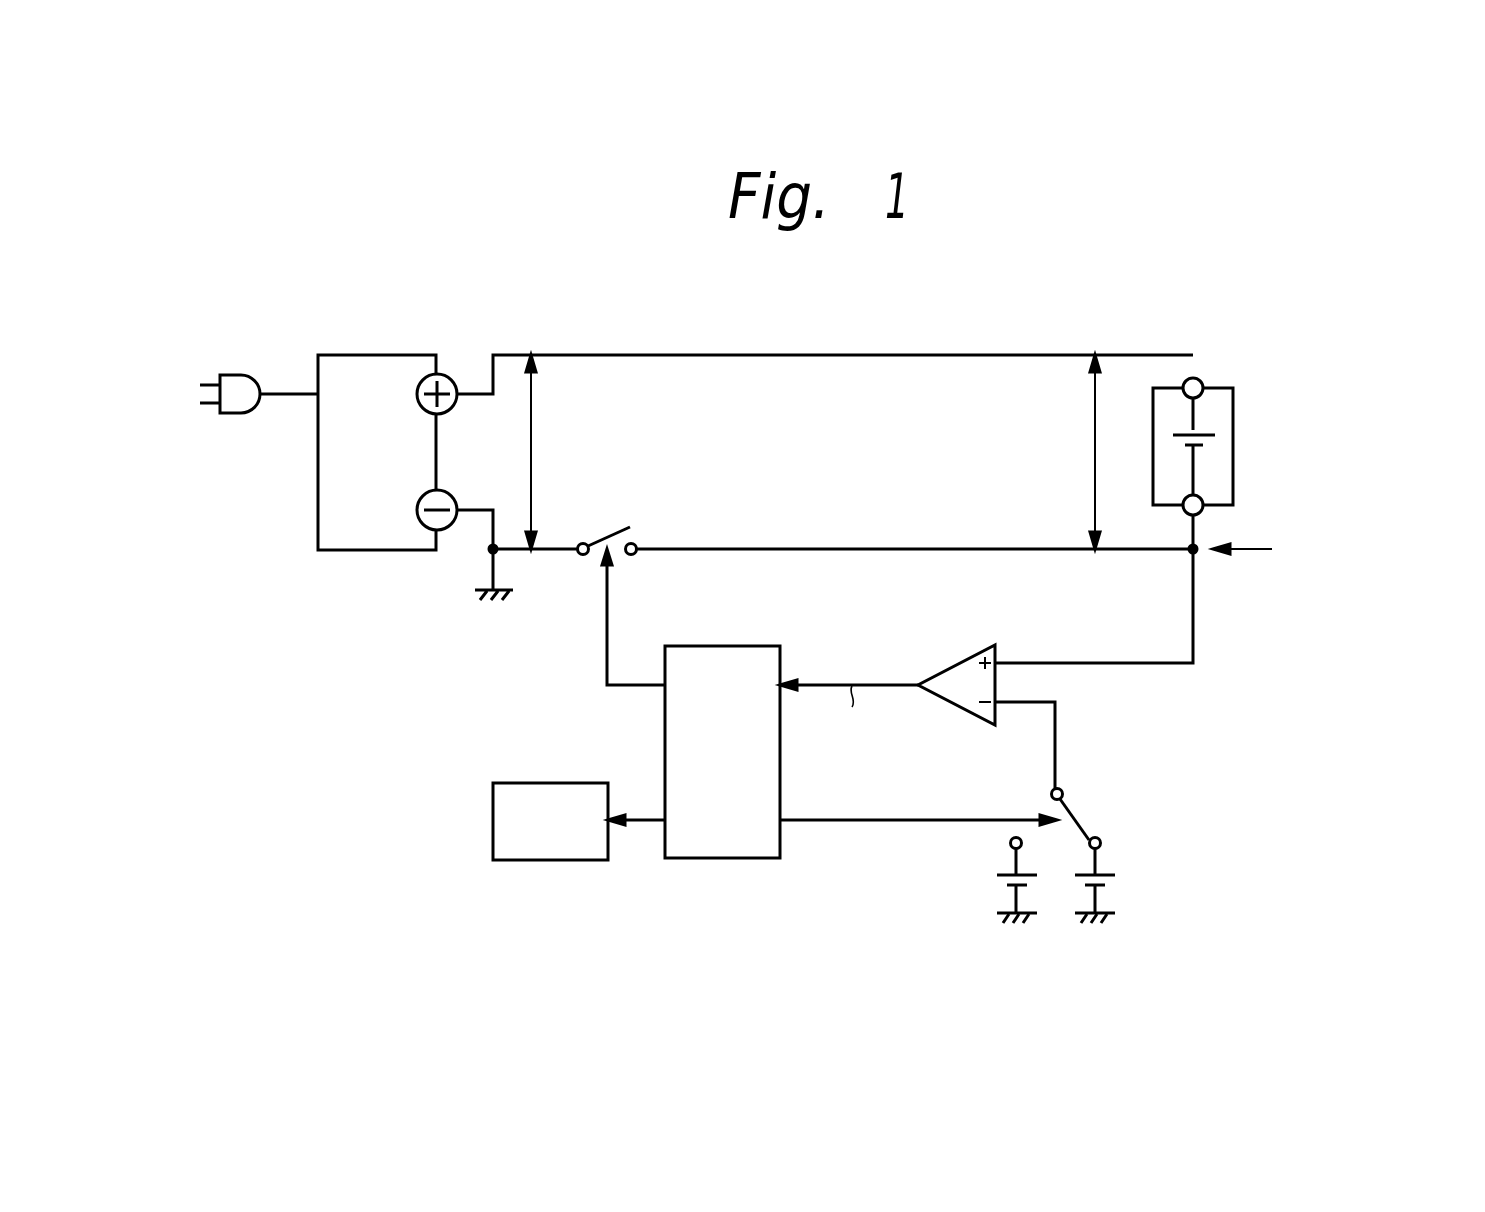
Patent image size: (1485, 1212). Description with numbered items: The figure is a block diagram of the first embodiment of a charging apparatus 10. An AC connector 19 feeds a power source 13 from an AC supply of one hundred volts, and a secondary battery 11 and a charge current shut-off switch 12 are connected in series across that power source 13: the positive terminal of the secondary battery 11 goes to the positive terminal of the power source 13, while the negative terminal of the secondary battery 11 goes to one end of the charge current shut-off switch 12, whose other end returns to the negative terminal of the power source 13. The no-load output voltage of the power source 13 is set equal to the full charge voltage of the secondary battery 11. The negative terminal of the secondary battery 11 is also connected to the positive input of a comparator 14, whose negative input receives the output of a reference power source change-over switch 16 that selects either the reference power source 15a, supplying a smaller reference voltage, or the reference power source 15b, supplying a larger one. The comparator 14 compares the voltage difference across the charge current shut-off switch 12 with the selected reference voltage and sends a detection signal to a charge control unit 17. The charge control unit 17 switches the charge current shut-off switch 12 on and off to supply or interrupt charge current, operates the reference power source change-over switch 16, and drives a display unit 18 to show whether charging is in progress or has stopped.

The charging apparatus 10 is at (843, 355).
The secondary battery 11 is at (1233, 442).
The charge current shut-off switch 12 is at (634, 530).
The power source 13 is at (379, 355).
The comparator 14 is at (953, 665).
The reference power source 15a is at (991, 893).
The reference power source 15b is at (1106, 892).
The reference power source change-over switch 16 is at (1082, 821).
The charge control unit 17 is at (718, 646).
The display unit 18 is at (493, 820).
The AC connector 19 is at (236, 375).